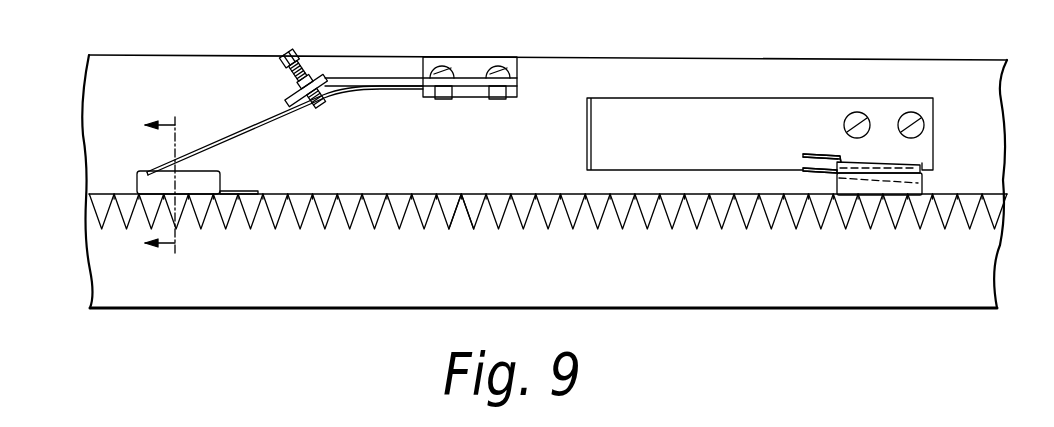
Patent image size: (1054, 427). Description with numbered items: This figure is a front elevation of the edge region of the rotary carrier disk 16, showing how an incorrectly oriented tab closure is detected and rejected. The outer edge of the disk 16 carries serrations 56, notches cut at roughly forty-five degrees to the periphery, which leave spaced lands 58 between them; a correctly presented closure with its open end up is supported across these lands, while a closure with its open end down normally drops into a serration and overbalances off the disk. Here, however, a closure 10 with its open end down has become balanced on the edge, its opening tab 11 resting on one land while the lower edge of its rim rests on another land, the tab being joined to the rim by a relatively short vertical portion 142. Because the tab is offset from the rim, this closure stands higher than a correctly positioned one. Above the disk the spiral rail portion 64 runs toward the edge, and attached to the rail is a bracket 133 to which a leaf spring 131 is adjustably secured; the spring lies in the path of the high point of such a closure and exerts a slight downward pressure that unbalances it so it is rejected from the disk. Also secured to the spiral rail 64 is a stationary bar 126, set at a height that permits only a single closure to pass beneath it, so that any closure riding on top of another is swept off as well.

The closure 10 is at (220, 175).
The opening tab 11 is at (258, 194).
The rotary carrier disk 16 is at (997, 265).
The serrations 56 is at (403, 196).
The lands 58 is at (458, 196).
The spiral rail portion 64 is at (813, 61).
The stationary bar 126 is at (675, 100).
The leaf spring 131 is at (244, 133).
The bracket 133 is at (365, 76).
The vertical portion 142 is at (840, 158).